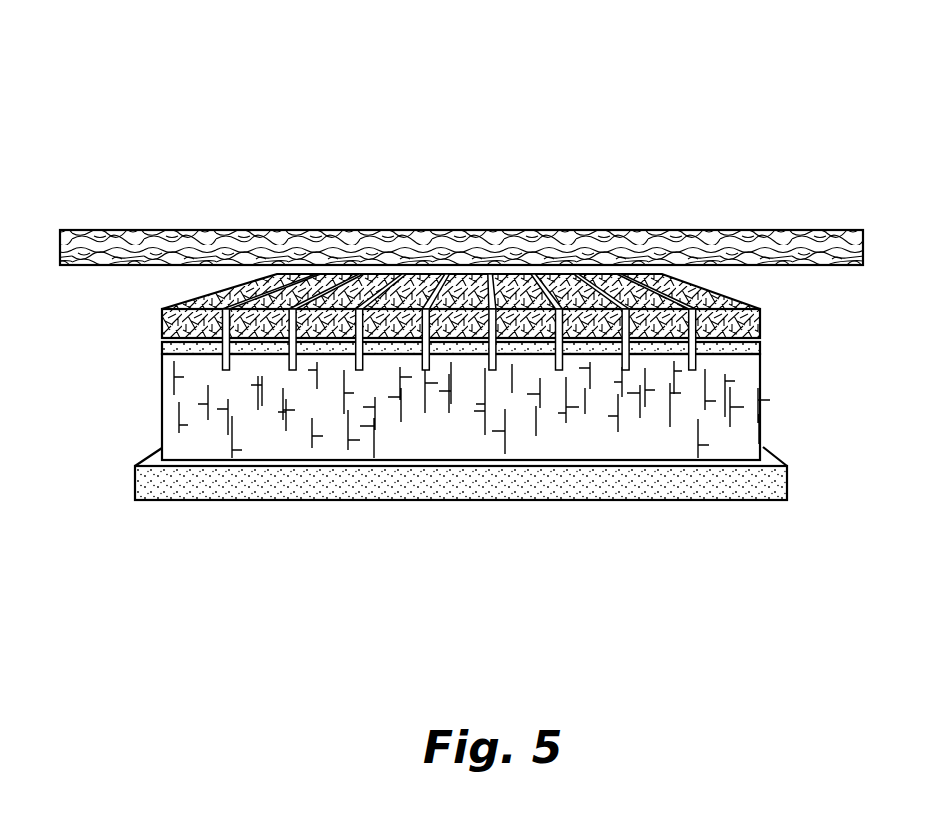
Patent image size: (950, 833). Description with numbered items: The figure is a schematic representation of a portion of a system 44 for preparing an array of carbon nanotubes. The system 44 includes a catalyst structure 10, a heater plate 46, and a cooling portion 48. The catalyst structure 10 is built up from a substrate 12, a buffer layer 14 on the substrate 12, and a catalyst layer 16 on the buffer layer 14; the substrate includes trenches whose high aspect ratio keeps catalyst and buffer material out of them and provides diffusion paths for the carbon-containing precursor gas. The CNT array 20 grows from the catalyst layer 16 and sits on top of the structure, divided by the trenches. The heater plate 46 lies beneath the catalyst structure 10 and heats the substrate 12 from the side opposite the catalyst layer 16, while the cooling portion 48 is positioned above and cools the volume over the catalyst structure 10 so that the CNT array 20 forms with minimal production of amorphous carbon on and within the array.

The system 44 is at (157, 88).
The cooling portion 48 is at (60, 235).
The buffer layer 14 is at (162, 350).
The catalyst structure 10 is at (177, 383).
The substrate 12 is at (177, 417).
The heater plate 46 is at (153, 487).
The CNT array 20 is at (762, 317).
The catalyst layer 16 is at (762, 342).